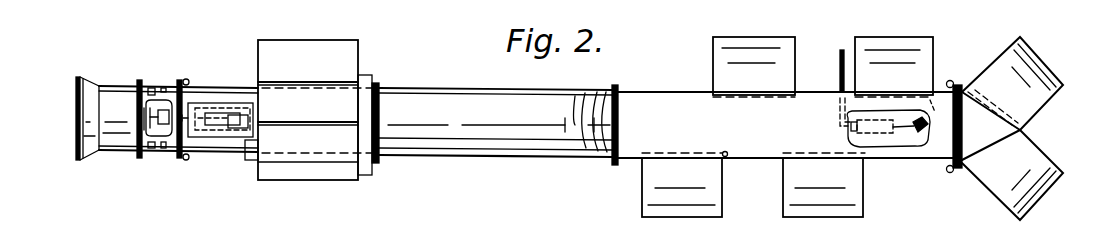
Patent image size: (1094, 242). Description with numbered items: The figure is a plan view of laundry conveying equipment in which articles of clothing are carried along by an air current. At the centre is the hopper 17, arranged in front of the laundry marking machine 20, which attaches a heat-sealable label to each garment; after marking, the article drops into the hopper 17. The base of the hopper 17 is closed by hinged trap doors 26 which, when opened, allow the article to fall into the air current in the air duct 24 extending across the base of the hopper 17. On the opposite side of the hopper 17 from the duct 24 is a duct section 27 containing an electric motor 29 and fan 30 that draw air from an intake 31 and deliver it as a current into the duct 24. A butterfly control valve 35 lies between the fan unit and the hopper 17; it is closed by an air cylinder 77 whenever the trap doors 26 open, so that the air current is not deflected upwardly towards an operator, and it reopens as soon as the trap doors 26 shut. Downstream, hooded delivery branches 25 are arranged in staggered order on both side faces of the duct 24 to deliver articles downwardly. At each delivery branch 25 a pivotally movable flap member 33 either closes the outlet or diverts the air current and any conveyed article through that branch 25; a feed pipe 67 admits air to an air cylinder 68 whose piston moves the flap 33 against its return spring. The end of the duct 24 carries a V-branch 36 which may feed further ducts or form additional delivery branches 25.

The hopper 17 is at (349, 175).
The laundry marking machine 20 is at (358, 48).
The air duct 24 is at (448, 157).
The delivery branch 25 is at (786, 176).
The hinged trap doors 26 is at (340, 138).
The duct section 27 is at (160, 92).
The electric motor 29 is at (162, 140).
The fan 30 is at (160, 144).
The intake 31 is at (81, 79).
The flap member 33 is at (655, 160).
The butterfly control valve 35 is at (202, 100).
The V-branch 36 is at (1043, 105).
The feed pipe 67 is at (840, 70).
The air cylinder 68 is at (850, 135).
The air cylinder 77 is at (246, 108).